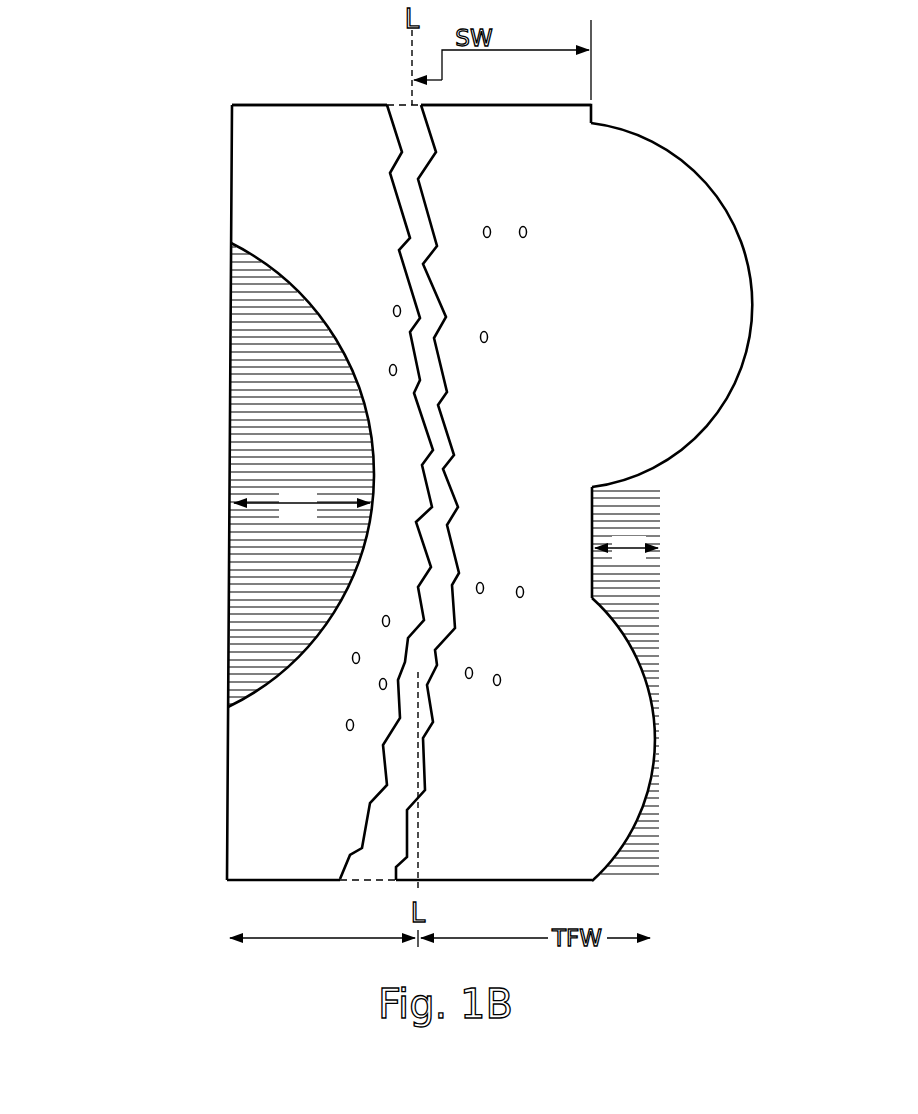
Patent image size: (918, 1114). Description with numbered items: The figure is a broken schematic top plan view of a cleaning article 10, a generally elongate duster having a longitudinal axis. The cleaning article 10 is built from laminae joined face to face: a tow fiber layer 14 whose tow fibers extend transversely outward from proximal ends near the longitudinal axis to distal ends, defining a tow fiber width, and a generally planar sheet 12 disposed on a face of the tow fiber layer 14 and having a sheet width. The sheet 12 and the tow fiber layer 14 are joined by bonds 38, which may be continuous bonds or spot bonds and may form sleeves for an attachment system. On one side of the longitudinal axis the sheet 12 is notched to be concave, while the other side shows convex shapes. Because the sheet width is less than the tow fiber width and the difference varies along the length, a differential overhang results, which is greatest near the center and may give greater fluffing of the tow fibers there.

The cleaning article 10 is at (170, 752).
The generally planar sheet 12 is at (313, 203).
The tow fiber layer 14 is at (291, 612).
The bonds 38 is at (522, 226).